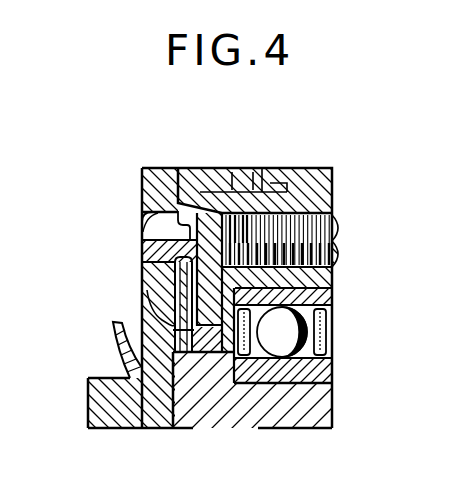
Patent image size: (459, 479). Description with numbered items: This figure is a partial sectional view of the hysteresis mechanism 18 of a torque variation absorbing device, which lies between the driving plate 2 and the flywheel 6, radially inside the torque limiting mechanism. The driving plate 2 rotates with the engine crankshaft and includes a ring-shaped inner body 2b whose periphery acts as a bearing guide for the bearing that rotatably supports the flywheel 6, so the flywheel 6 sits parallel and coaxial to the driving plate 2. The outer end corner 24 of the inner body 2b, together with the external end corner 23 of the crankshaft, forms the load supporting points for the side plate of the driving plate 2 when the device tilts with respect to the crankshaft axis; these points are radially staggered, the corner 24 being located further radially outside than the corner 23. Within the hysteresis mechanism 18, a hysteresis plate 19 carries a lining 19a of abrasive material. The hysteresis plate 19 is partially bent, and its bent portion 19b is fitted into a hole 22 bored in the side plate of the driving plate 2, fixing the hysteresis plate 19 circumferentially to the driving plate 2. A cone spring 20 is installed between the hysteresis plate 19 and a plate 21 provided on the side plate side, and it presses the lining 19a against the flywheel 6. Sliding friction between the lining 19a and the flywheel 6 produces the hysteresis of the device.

The driving plate 2 is at (158, 184).
The inner body 2b is at (286, 386).
The flywheel 6 is at (330, 271).
The hysteresis mechanism 18 is at (266, 292).
The hysteresis plate 19 is at (216, 336).
The lining 19a is at (178, 270).
The bent portion 19b is at (152, 250).
The cone spring 20 is at (213, 348).
The plate 21 is at (176, 283).
The hole 22 is at (142, 230).
The external end corner 23 is at (126, 357).
The outer end corner 24 is at (144, 322).